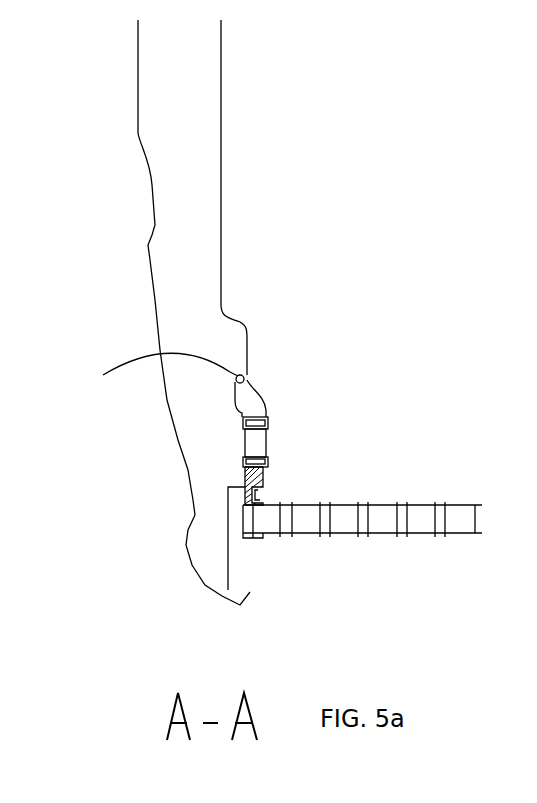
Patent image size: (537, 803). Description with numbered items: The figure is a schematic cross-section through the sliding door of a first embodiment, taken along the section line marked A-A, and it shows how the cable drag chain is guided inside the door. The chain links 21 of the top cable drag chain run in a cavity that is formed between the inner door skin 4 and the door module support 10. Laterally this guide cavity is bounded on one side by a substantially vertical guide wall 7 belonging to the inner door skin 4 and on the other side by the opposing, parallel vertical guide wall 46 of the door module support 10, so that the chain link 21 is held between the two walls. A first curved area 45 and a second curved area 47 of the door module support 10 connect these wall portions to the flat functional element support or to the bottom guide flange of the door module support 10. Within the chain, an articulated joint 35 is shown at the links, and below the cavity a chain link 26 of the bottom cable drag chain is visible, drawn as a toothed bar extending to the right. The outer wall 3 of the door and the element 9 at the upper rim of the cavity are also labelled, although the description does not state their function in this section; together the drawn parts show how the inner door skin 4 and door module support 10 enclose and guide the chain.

The outer housing wall 3 is at (137, 93).
The door module support 10 is at (221, 87).
The sealing lip 9 is at (157, 373).
The first curved area 45 is at (258, 395).
The chain link of top cable drag chain 21 is at (266, 417).
The guide wall 7 is at (243, 443).
The vertical guide wall 46 is at (268, 449).
The articulated joint 35 is at (240, 490).
The second curved area 47 is at (263, 493).
The inner door skin 4 is at (228, 556).
The chain link of bottom cable drag chain 26 is at (270, 527).